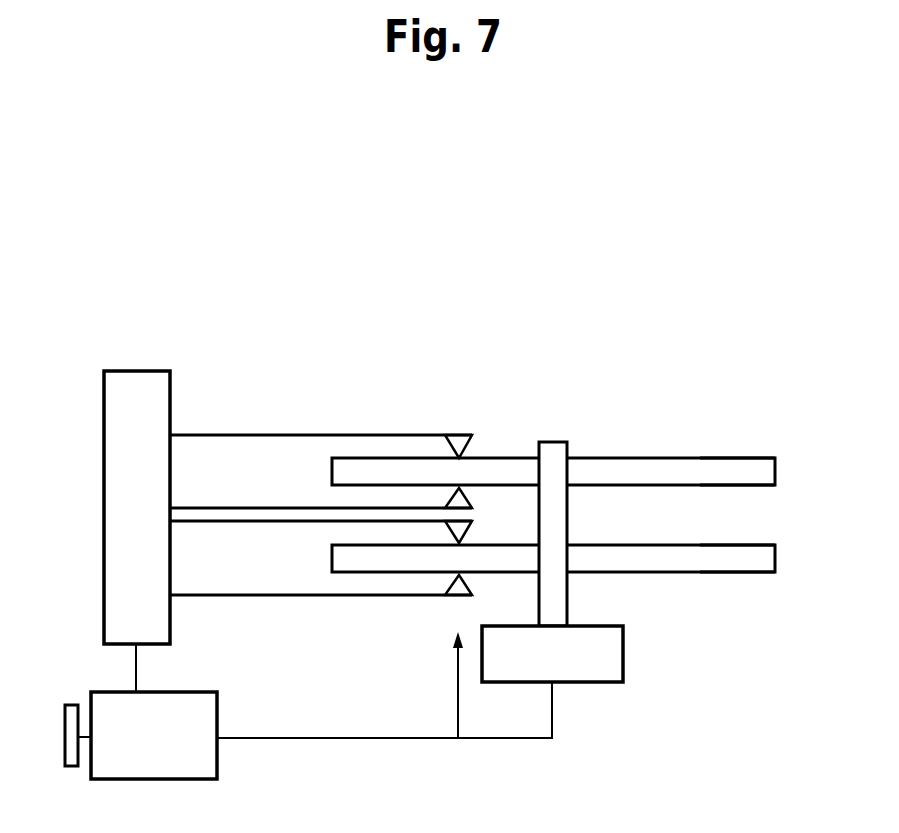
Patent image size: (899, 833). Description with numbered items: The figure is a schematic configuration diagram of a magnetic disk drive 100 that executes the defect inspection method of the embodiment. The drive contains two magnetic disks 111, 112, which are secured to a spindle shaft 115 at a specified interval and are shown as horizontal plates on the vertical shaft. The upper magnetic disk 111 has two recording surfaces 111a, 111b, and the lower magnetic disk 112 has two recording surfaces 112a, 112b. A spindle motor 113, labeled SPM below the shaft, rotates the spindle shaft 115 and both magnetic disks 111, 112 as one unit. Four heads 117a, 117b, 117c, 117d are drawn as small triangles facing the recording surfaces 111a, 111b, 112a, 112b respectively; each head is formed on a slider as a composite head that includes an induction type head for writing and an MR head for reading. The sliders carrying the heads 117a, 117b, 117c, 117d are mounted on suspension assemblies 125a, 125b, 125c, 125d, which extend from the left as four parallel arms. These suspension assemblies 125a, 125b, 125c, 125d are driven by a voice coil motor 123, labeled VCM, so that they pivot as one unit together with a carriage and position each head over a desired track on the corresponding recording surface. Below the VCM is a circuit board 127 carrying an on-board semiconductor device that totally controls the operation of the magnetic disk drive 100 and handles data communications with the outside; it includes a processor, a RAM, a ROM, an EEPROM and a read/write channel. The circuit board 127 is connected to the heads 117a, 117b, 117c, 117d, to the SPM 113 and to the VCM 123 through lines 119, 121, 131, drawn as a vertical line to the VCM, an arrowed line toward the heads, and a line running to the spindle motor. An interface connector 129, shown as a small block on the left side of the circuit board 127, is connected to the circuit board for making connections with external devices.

The magnetic disk drive 100 is at (541, 327).
The magnetic disk 111 is at (775, 472).
The recording surface 111a is at (748, 459).
The recording surface 111b is at (762, 488).
The magnetic disk 112 is at (775, 559).
The recording surface 112a is at (765, 545).
The recording surface 112b is at (760, 574).
The spindle motor 113 is at (623, 655).
The spindle shaft 115 is at (559, 442).
The head 117a is at (470, 447).
The head 117b is at (470, 497).
The head 117c is at (468, 535).
The head 117d is at (458, 597).
The line 119 is at (455, 706).
The line 121 is at (553, 712).
The voice coil motor 123 is at (132, 371).
The suspension assembly 125a is at (238, 435).
The suspension assembly 125b is at (232, 508).
The suspension assembly 125c is at (228, 522).
The suspension assembly 125d is at (233, 596).
The circuit board 127 is at (168, 780).
The interface connector 129 is at (72, 768).
The line 131 is at (136, 672).